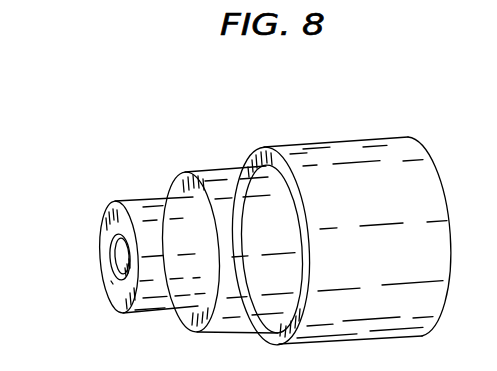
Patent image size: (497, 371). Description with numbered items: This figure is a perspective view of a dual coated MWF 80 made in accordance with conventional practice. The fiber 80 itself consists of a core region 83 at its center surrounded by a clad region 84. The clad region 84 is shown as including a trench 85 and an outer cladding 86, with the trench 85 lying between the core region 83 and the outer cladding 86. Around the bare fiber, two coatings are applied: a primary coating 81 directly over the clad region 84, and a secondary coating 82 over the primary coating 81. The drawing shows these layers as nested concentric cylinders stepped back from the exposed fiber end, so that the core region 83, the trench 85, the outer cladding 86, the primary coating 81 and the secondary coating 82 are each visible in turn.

The dual coated MWF 80 is at (150, 205).
The primary coating 81 is at (227, 172).
The secondary coating 82 is at (340, 145).
The core region 83 is at (122, 253).
The clad region 84 is at (120, 302).
The trench 85 is at (118, 235).
The outer cladding 86 is at (112, 282).